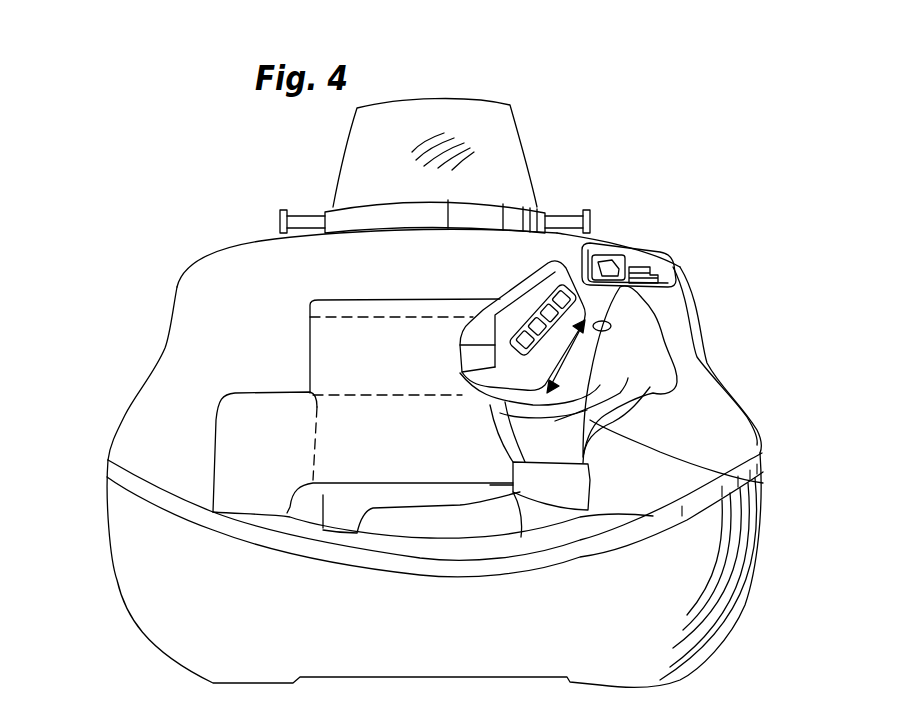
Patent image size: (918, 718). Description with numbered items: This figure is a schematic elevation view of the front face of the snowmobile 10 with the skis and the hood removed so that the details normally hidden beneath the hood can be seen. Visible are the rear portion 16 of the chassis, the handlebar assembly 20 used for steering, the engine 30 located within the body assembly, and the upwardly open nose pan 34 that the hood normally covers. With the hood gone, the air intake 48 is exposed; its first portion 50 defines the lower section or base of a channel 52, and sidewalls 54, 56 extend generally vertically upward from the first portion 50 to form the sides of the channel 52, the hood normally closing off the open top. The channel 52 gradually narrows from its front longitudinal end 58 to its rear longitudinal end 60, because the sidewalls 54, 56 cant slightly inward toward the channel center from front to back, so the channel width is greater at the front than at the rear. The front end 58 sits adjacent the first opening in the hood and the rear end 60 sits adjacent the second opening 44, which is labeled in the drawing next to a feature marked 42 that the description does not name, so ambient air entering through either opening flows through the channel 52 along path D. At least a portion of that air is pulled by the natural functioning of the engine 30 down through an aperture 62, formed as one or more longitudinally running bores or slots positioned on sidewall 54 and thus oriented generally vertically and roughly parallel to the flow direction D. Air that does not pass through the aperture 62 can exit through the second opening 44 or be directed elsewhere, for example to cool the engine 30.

The snowmobile 10 is at (138, 243).
The rear portion 16 is at (507, 96).
The handlebar assembly 20 is at (383, 197).
The engine 30 is at (310, 340).
The nose pan 34 is at (133, 587).
The display 42 is at (612, 268).
The second opening 44 is at (620, 266).
The air intake 48 is at (673, 305).
The first portion 50 is at (592, 382).
The channel 52 is at (595, 363).
The sidewall 54 is at (517, 457).
The sidewall 56 is at (608, 341).
The front longitudinal end 58 is at (527, 390).
The rear longitudinal end 60 is at (593, 313).
The aperture 62 is at (560, 394).
The path D is at (763, 483).